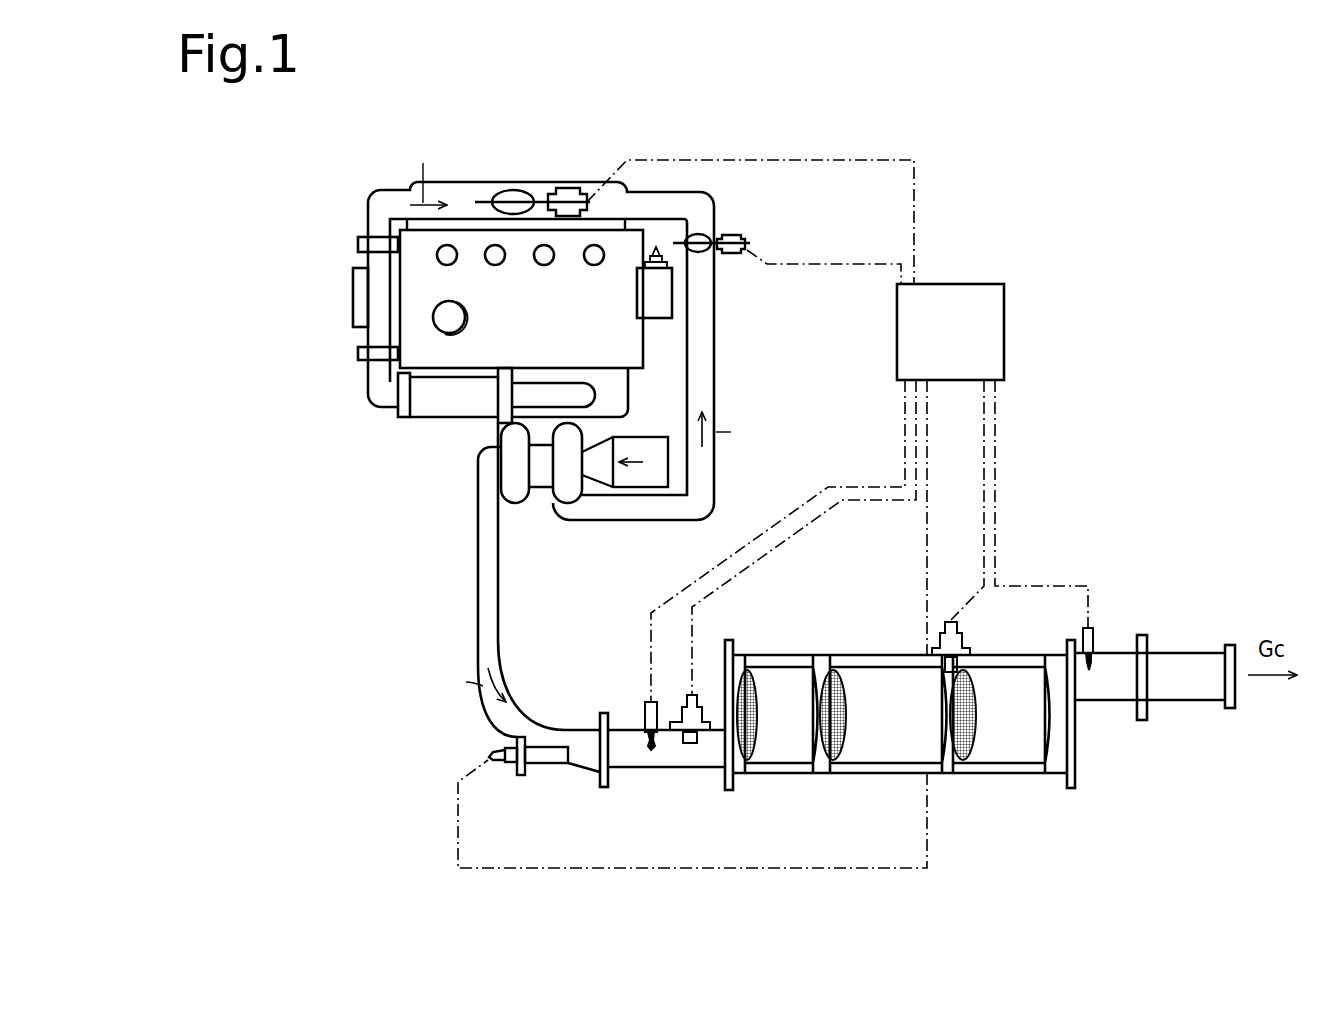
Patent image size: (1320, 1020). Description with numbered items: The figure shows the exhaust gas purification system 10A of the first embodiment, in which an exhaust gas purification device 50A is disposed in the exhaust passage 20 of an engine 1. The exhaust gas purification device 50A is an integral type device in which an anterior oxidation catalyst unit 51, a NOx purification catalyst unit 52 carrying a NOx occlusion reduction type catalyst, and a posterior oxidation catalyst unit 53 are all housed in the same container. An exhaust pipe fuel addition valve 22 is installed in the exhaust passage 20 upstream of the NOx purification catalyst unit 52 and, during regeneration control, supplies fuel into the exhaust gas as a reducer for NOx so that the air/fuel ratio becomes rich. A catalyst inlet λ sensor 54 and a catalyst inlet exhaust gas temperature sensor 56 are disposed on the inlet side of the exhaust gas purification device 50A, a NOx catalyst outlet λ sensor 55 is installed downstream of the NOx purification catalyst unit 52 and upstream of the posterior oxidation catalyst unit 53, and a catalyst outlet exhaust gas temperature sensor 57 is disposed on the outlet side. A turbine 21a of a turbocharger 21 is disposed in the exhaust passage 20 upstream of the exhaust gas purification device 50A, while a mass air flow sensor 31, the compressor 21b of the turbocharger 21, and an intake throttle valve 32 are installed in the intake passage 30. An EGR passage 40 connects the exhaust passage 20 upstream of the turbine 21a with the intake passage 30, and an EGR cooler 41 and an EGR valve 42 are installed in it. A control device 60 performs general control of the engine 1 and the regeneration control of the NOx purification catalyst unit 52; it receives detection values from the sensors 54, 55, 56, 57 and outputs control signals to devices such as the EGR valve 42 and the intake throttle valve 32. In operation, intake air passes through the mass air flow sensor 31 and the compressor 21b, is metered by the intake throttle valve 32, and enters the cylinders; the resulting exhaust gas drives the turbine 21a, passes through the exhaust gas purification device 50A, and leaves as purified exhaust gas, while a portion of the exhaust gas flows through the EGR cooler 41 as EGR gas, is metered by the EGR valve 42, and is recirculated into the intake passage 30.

The engine 1 is at (546, 326).
The exhaust gas purification system 10A is at (1059, 436).
The exhaust passage 20 is at (508, 720).
The turbocharger 21 is at (490, 485).
The turbine 21a is at (510, 470).
The compressor 21b is at (570, 483).
The exhaust pipe fuel addition valve 22 is at (548, 763).
The intake passage 30 is at (716, 332).
The mass air flow sensor 31 is at (630, 475).
The intake throttle valve 32 is at (728, 235).
The EGR passage 40 is at (383, 212).
The EGR cooler 41 is at (377, 307).
The EGR valve 42 is at (566, 186).
The exhaust gas purification device 50A is at (900, 692).
The anterior oxidation catalyst unit 51 is at (778, 733).
The NOx purification catalyst unit 52 is at (890, 723).
The posterior oxidation catalyst unit 53 is at (1012, 727).
The catalyst inlet λ sensor 54 is at (693, 745).
The NOx catalyst outlet λ sensor 55 is at (951, 618).
The catalyst inlet exhaust gas temperature sensor 56 is at (650, 752).
The catalyst outlet exhaust gas temperature sensor 57 is at (1090, 672).
The control device 60 is at (967, 342).